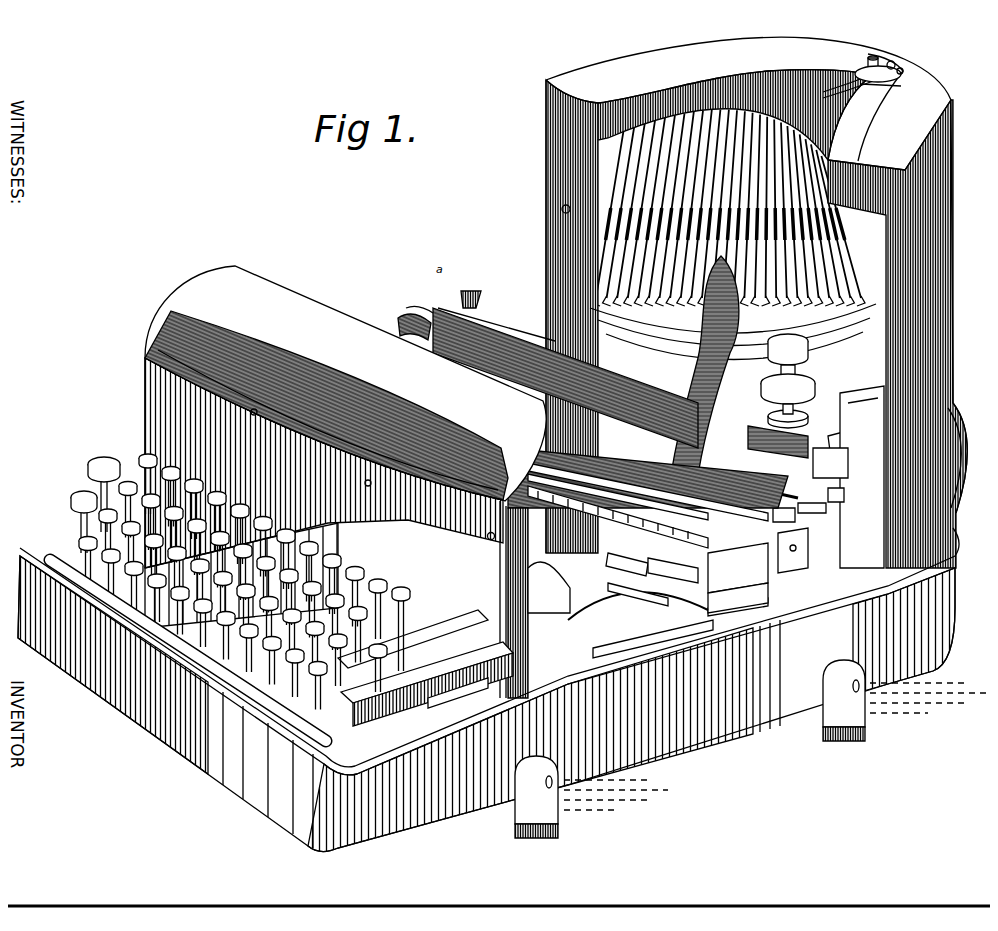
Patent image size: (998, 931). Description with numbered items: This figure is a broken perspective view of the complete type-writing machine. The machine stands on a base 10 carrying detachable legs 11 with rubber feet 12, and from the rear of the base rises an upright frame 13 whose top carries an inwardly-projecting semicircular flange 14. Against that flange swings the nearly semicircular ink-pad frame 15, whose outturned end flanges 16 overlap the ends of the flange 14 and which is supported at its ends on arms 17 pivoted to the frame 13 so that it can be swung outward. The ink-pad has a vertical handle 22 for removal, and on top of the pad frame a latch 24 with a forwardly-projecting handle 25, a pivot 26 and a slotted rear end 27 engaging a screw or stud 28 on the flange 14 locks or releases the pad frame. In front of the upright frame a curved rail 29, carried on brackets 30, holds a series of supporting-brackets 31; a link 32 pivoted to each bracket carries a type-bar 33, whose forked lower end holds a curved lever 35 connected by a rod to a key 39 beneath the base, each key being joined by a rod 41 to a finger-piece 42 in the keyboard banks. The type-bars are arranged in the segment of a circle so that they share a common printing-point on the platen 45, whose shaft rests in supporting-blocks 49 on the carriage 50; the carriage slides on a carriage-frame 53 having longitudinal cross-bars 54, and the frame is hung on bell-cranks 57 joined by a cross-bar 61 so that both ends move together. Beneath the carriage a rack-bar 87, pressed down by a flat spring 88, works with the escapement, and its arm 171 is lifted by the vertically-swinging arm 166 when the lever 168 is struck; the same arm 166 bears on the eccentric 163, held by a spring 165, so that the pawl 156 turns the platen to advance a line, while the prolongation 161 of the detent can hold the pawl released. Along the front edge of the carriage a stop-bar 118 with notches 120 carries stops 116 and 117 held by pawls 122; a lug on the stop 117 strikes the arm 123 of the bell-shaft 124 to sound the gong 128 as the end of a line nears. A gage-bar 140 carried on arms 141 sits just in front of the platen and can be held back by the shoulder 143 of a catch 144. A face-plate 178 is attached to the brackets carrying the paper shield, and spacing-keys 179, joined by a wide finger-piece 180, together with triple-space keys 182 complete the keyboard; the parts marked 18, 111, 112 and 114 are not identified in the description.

The base 10 is at (488, 690).
The legs 11 is at (42, 548).
The rubber feet 12 is at (840, 734).
The upright frame 13 is at (915, 415).
The semicircular flange 14 is at (62, 480).
The ink-pad frame 15 is at (92, 446).
The end flanges 16 is at (572, 80).
The arms 17 is at (553, 140).
The screw 18 is at (554, 201).
The handle 22 is at (860, 52).
The latch 24 is at (893, 70).
The handle 25 is at (822, 80).
The pivot 26 is at (893, 80).
The slot 27 is at (896, 63).
The screw or stud 28 is at (888, 56).
The curved rail 29 is at (833, 465).
The brackets 30 is at (862, 477).
The supporting-brackets 31 is at (580, 325).
The link 32 is at (600, 312).
The type-bar 33 is at (936, 324).
The curved lever 35 is at (598, 292).
The key 39 is at (413, 639).
The rod 41 is at (397, 606).
The finger-piece 42 is at (400, 583).
The platen 45 is at (565, 378).
The supporting-blocks 49 is at (822, 486).
The carriage 50 is at (804, 550).
The carriage-frame 53 is at (738, 589).
The cross-bars 54 is at (738, 568).
The bell-cranks 57 is at (653, 639).
The cross-bar 61 is at (638, 593).
The rack-bar 87 is at (648, 474).
The flat spring 88 is at (648, 491).
The plate 111 is at (539, 603).
The bar 112 is at (615, 491).
The plate 114 is at (458, 704).
The stop 116 is at (345, 383).
The stop 117 is at (618, 517).
The stop-bar 118 is at (673, 570).
The notches 120 is at (613, 523).
The pawls 122 is at (481, 531).
The arm 123 is at (638, 606).
The bell-shaft 124 is at (629, 567).
The bell or gong 128 is at (785, 441).
The gage-bar 140 is at (481, 305).
The arms 141 is at (408, 300).
The shoulder 143 is at (468, 286).
The catch 144 is at (388, 312).
The pawl 156 is at (758, 386).
The prolongation 161 is at (643, 575).
The eccentric 163 is at (775, 399).
The spring 165 is at (771, 481).
The vertically-swinging arm 166 is at (830, 508).
The lever 168 is at (703, 377).
The arm 171 is at (695, 483).
The face-plate 178 is at (325, 528).
The spacing-keys 179 is at (373, 691).
The finger-piece 180 is at (316, 736).
The triple-space keys 182 is at (427, 695).